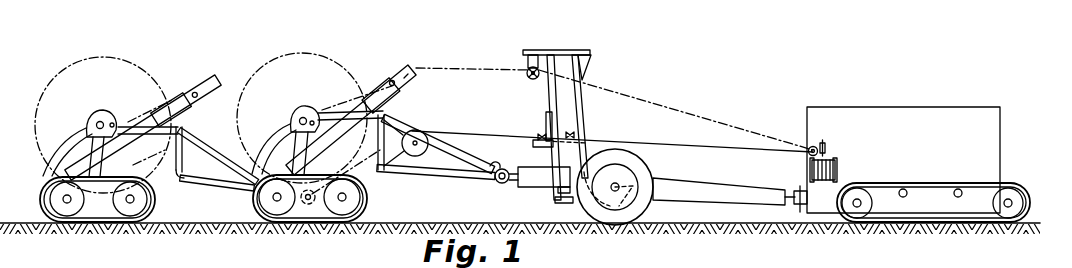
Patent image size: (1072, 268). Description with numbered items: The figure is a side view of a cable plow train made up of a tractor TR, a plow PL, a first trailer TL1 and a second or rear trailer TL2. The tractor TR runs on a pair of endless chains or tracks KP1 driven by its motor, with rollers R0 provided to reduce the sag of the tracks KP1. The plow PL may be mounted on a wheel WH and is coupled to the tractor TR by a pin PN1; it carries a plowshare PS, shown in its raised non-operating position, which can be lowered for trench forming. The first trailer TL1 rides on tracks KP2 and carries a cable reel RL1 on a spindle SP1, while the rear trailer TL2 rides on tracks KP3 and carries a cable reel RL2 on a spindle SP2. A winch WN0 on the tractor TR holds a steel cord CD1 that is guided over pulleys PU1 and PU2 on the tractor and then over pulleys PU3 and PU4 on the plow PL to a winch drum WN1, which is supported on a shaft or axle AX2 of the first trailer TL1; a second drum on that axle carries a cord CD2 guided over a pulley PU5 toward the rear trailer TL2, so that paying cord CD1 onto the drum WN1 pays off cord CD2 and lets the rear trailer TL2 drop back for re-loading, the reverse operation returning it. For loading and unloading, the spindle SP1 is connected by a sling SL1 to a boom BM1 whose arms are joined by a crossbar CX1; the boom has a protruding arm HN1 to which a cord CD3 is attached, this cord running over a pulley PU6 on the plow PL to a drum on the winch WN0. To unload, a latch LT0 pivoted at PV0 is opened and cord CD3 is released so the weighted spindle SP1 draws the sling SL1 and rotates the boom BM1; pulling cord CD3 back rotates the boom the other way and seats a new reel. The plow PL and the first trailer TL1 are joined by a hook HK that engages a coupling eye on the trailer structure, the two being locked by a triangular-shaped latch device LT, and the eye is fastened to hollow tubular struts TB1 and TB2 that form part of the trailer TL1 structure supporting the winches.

The cable reel RL2 is at (68, 73).
The second or rear trailer TL2 is at (143, 118).
The spindle SP2 is at (99, 121).
The endless chains or tracks KP3 is at (158, 203).
The cable reel RL1 is at (282, 62).
The first trailer TL1 is at (351, 113).
The crossbar CX1 is at (392, 80).
The cord CD3 is at (473, 61).
The protruding arm HN1 is at (405, 75).
The boom BM1 is at (386, 98).
The spindle SP1 is at (305, 114).
The sling SL1 is at (332, 112).
The latch LT0 is at (292, 115).
The pivot PV0 is at (298, 138).
The winch drum WN1 is at (416, 140).
The cord or rope CD1 is at (461, 135).
The hollow tubular strut TB2 is at (455, 150).
The cord CD2 is at (366, 177).
The shaft or axle AX2 is at (416, 146).
The hollow tubular strut TB1 is at (450, 179).
The endless chains or tracks KP2 is at (367, 212).
The pulley PU5 is at (311, 226).
The plow PL is at (558, 56).
The pulley PU6 is at (530, 78).
The pulley PU4 is at (538, 136).
The pulley PU3 is at (583, 128).
The triangular-shaped latch device LT is at (502, 166).
The hook HK is at (502, 184).
The plowshare PS is at (612, 179).
The wheel WH is at (640, 207).
The tractor TR is at (933, 118).
The pulley PU2 is at (815, 146).
The pulley PU1 is at (826, 148).
The winch WN0 is at (837, 170).
The endless chains or tracks KP1 is at (1025, 186).
The rollers R0 is at (955, 196).
The pin PN1 is at (792, 209).